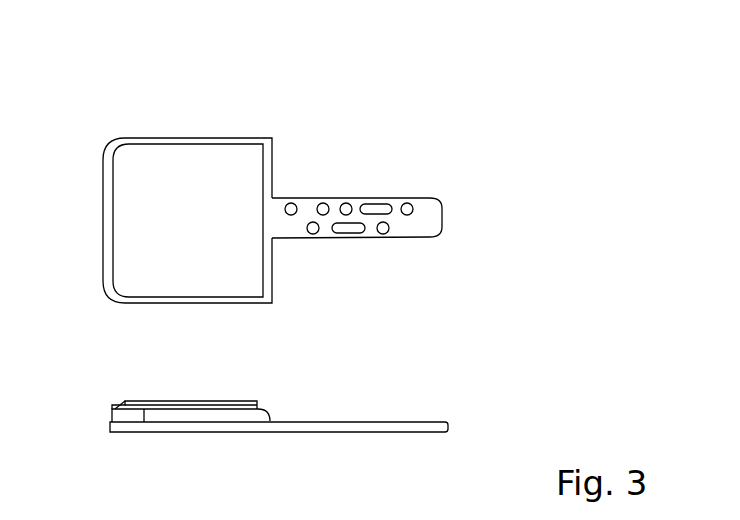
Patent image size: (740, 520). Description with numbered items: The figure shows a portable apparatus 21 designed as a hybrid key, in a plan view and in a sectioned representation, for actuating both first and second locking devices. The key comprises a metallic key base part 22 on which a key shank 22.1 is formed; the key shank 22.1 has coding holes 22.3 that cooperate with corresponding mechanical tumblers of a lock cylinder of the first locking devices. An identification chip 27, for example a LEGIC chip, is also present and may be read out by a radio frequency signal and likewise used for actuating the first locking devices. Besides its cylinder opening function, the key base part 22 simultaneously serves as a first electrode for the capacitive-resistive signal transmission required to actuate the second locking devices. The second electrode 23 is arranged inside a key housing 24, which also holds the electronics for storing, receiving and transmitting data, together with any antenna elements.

The portable apparatus 21 is at (122, 109).
The key base part 22 is at (267, 187).
The key shank 22.1 is at (320, 236).
The coding holes 22.3 is at (348, 203).
The second electrode 23 is at (228, 405).
The key housing 24 is at (250, 158).
The identification chip 27 is at (122, 417).